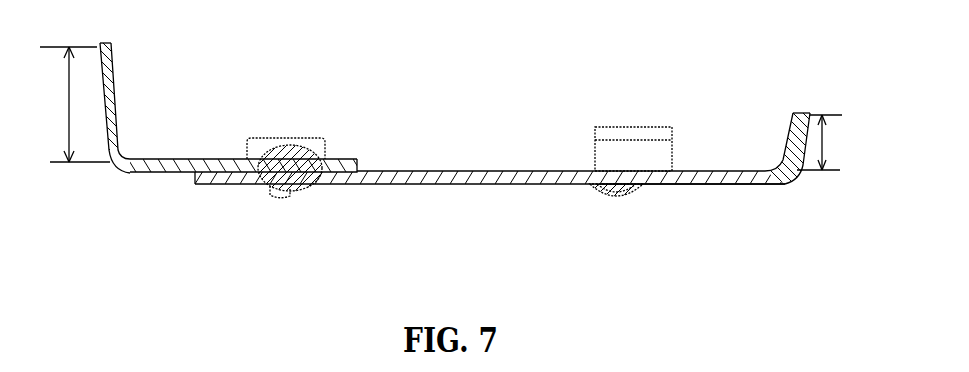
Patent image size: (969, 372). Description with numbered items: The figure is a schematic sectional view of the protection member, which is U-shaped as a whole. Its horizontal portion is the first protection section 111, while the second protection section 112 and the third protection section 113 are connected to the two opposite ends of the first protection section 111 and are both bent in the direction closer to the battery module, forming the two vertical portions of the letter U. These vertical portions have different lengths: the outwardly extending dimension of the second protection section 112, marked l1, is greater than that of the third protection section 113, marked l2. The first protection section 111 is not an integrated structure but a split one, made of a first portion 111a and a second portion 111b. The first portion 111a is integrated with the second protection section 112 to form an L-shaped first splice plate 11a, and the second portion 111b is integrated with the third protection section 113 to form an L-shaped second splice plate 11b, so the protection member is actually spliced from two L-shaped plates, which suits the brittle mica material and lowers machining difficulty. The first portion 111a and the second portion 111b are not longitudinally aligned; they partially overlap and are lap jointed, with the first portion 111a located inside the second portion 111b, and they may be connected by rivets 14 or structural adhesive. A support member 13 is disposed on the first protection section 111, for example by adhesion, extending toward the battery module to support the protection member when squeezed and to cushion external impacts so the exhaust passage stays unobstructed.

The second protection section 112 is at (113, 65).
The first splice plate 11a is at (148, 140).
The first portion 111a is at (155, 175).
The first protection section 111 is at (335, 188).
The second portion 111b is at (503, 187).
The second splice plate 11b is at (723, 168).
The support member 13 is at (632, 127).
The rivets 14 is at (628, 198).
The third protection section 113 is at (793, 122).
The length of second protection section l1 is at (72, 104).
The length of third protection section l2 is at (830, 142).